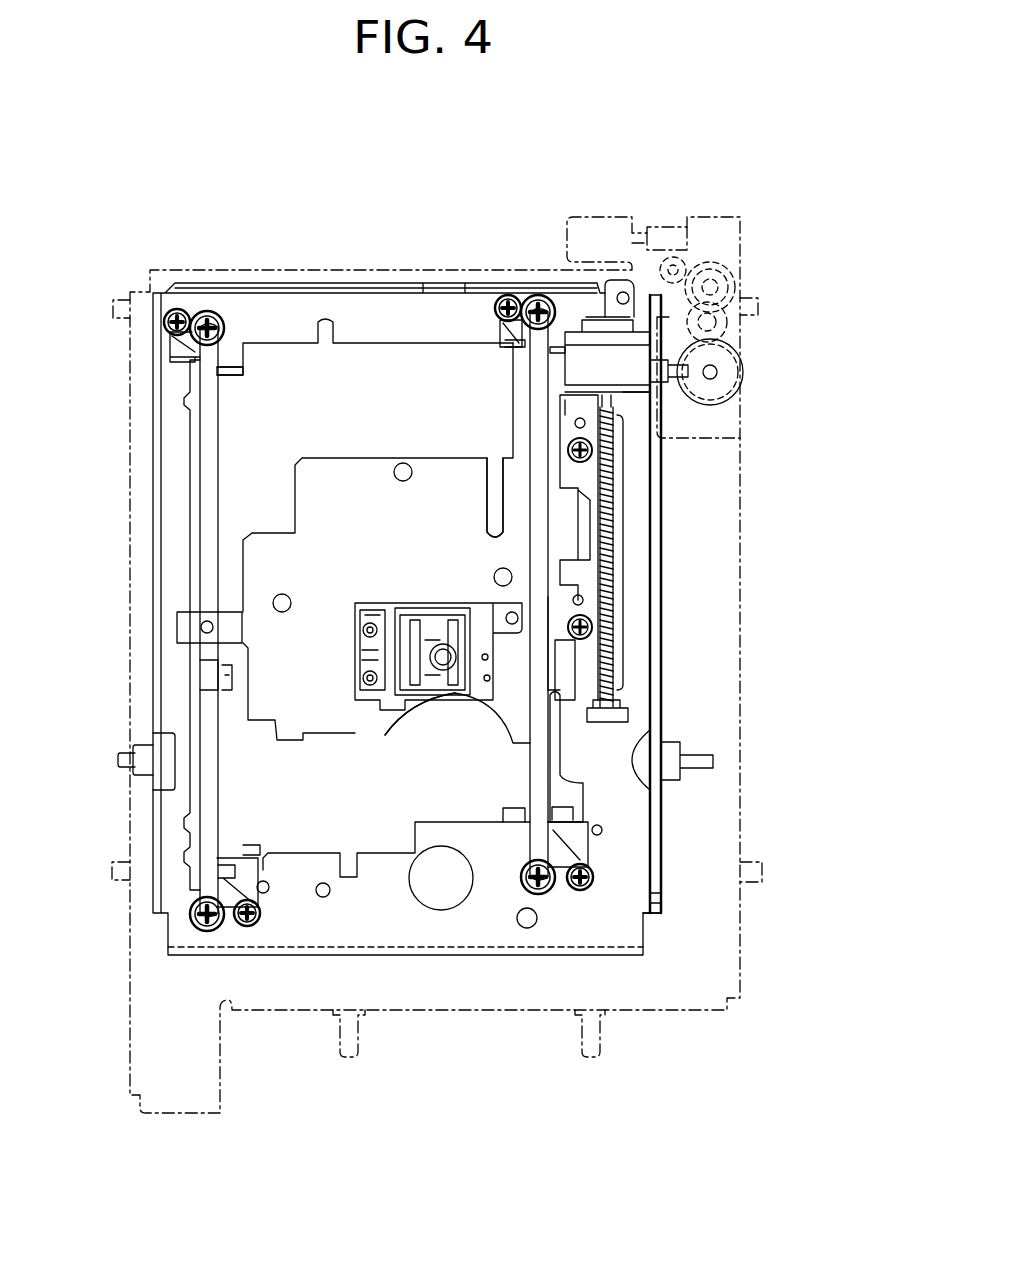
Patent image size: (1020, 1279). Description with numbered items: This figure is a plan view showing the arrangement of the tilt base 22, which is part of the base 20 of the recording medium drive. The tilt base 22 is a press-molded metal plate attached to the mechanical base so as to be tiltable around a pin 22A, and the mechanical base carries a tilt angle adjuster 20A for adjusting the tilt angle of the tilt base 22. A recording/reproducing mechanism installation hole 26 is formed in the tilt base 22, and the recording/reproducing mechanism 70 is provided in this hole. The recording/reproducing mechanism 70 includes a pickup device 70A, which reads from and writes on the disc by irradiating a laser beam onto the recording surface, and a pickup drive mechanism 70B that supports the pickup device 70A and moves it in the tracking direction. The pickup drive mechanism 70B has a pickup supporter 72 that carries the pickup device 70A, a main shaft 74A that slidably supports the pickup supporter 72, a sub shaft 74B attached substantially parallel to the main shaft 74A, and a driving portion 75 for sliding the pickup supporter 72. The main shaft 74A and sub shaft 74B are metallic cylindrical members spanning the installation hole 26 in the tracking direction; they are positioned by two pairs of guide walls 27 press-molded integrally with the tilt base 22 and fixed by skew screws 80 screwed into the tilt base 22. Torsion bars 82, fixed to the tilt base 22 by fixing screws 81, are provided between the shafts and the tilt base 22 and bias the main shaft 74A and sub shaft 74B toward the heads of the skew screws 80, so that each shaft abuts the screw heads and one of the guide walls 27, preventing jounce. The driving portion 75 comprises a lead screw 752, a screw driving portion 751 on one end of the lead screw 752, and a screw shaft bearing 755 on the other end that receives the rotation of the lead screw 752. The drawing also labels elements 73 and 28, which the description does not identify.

The base 20 is at (407, 237).
The tilt angle adjuster 20A is at (740, 432).
The tilt base 22 is at (400, 333).
The pin 22A is at (123, 745).
The recording/reproducing mechanism installation hole 26 is at (368, 340).
The guide walls 27 is at (197, 417).
The hole 28 is at (270, 893).
The recording/reproducing mechanism 70 is at (315, 390).
The pickup device 70A is at (408, 700).
The pickup drive mechanism 70B is at (500, 462).
The pickup supporter 72 is at (327, 720).
The fixing portion 73 is at (574, 309).
The main shaft 74A is at (540, 862).
The sub shaft 74B is at (205, 535).
The driving portion 75 is at (644, 315).
The screw driving portion 751 is at (590, 360).
The lead screw 752 is at (612, 595).
The screw shaft bearing 755 is at (620, 727).
The skew screws 80 is at (207, 312).
The fixing screws 81 is at (177, 309).
The torsion bars 82 is at (168, 342).